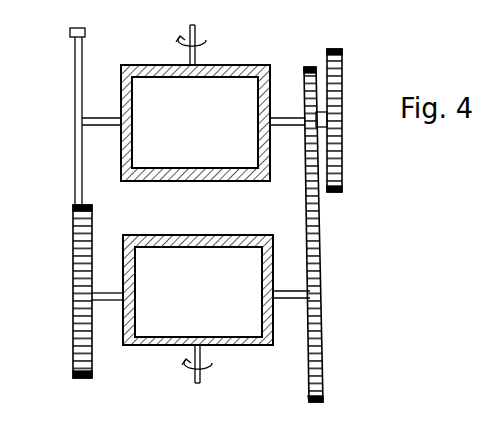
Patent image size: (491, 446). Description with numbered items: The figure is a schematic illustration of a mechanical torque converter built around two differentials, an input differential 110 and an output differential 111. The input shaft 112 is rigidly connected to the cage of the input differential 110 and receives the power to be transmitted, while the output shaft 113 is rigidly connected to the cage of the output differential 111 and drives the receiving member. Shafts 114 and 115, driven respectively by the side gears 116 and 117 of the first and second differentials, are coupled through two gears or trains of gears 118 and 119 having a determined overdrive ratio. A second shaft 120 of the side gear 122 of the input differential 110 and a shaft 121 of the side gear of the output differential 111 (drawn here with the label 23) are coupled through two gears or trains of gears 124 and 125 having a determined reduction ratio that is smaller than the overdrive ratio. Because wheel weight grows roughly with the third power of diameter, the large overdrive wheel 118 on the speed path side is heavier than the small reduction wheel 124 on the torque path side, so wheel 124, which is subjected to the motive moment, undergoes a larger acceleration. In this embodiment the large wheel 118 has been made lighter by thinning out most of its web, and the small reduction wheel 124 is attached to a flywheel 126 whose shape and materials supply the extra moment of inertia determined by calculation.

The input differential 110 is at (184, 108).
The output differential 111 is at (205, 313).
The input shaft 112 is at (196, 27).
The output shaft 113 is at (199, 384).
The shaft 114 is at (89, 117).
The shaft 115 is at (94, 283).
The side gear 116 is at (120, 85).
The side gear 117 is at (126, 337).
The large reduction wheel 118 is at (78, 148).
The gear 119 is at (82, 318).
The shaft 120 is at (335, 234).
The shaft 121 is at (303, 283).
The side gear 122 is at (271, 70).
The small reduction wheel 124 is at (312, 169).
The gear 125 is at (313, 345).
The flywheel 126 is at (335, 68).
The housing wall portion 23 is at (274, 322).